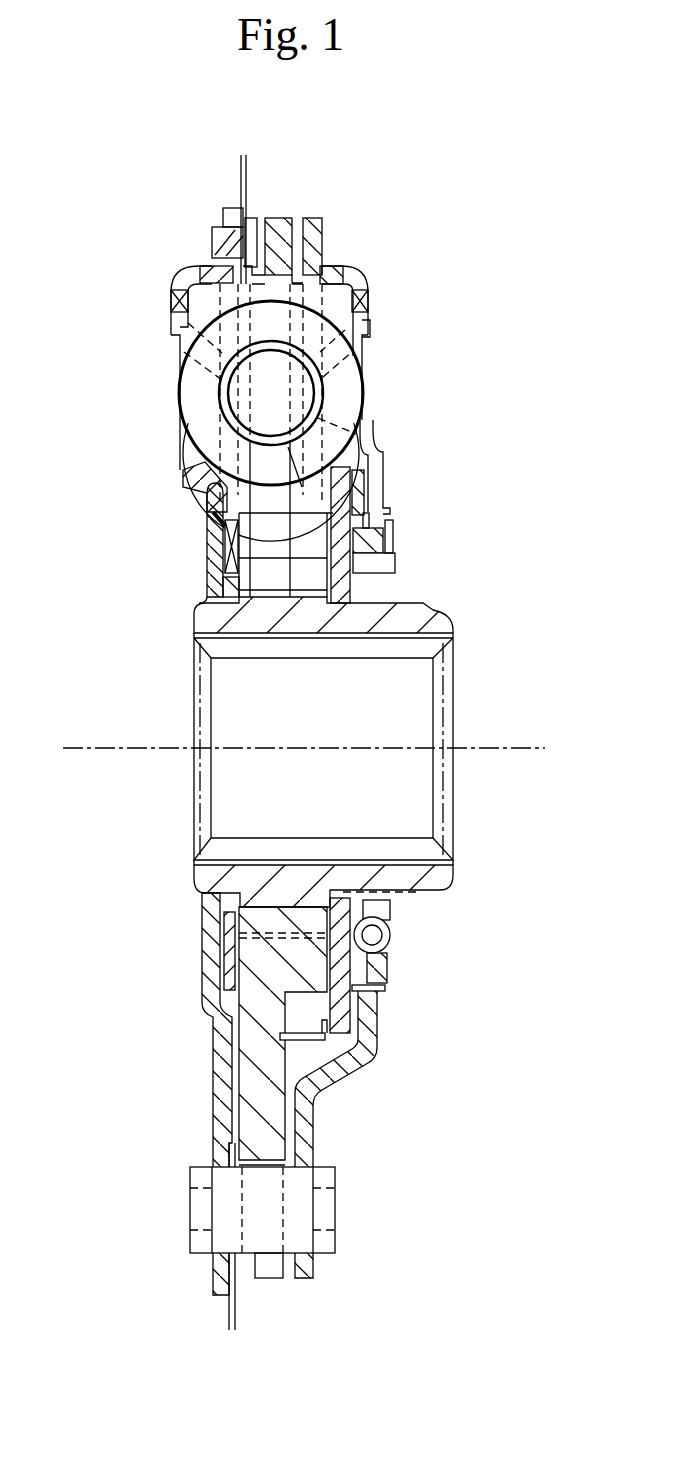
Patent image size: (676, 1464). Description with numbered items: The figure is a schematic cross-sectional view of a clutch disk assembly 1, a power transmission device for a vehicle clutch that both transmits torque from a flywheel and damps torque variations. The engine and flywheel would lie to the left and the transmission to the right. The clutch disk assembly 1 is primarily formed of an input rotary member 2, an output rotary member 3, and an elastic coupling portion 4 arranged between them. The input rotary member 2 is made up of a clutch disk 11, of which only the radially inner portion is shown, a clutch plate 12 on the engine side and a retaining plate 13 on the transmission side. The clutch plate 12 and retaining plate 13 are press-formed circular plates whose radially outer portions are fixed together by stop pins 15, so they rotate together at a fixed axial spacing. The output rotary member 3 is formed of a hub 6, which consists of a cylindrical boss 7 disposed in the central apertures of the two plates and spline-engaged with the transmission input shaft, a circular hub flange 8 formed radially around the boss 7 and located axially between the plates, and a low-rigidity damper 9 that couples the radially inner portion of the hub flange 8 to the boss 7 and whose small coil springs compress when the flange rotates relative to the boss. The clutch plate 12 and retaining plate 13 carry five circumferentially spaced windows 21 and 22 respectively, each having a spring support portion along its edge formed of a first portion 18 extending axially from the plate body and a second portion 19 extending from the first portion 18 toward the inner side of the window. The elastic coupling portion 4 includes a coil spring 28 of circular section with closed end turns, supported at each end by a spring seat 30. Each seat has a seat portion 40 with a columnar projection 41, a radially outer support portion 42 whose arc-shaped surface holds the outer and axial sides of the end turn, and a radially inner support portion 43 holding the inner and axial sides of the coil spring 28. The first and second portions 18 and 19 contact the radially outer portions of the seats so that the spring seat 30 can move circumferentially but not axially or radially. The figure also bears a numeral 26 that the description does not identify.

The clutch disk assembly 1 is at (434, 207).
The input rotary member 2 is at (193, 222).
The output rotary member 3 is at (500, 618).
The elastic coupling portion 4 is at (402, 374).
The hub 6 is at (498, 651).
The boss 7 is at (442, 600).
The hub flange 8 is at (248, 1052).
The low-rigidity damper 9 is at (420, 938).
The clutch disk 11 is at (246, 178).
The clutch plate 12 is at (222, 1067).
The retaining plate 13 is at (355, 1063).
The stop pins 15 is at (272, 1197).
The first portion 18 is at (205, 267).
The second portion 19 is at (170, 300).
The first window 21 is at (163, 342).
The second window 22 is at (390, 328).
The stopper 26 is at (275, 1270).
The coil spring 28 is at (345, 405).
The spring seat 30 is at (370, 348).
The seat portion 40 is at (350, 282).
The projection 41 is at (255, 378).
The radially outer support portion 42 is at (170, 283).
The radially inner support portion 43 is at (200, 458).